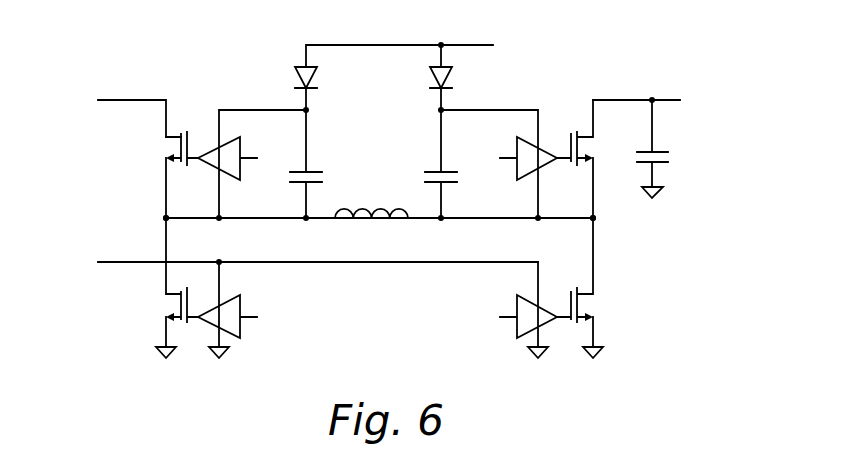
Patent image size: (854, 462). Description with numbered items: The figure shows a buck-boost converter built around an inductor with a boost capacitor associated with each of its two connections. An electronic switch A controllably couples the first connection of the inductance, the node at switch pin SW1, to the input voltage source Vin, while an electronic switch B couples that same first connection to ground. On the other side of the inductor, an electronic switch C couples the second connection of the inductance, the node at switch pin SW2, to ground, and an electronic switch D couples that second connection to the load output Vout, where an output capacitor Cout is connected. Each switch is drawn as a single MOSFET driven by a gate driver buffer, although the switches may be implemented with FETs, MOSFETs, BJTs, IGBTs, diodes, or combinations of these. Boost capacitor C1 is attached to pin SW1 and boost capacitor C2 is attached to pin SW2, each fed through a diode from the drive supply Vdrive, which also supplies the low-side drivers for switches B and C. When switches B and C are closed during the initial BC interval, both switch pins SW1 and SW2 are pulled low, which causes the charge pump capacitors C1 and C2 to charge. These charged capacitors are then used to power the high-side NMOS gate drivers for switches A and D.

The electronic switch A is at (224, 164).
The electronic switch B is at (200, 288).
The electronic switch C is at (556, 288).
The electronic switch D is at (527, 159).
The boost capacitor C1 is at (321, 181).
The boost capacitor C2 is at (426, 181).
The output capacitor Cout is at (676, 149).
The switch pin SW1 is at (181, 213).
The switch pin SW2 is at (574, 213).
The input voltage terminal Vin is at (124, 112).
The output voltage terminal Vout is at (657, 102).
The drive voltage supply Vdrive is at (297, 154).